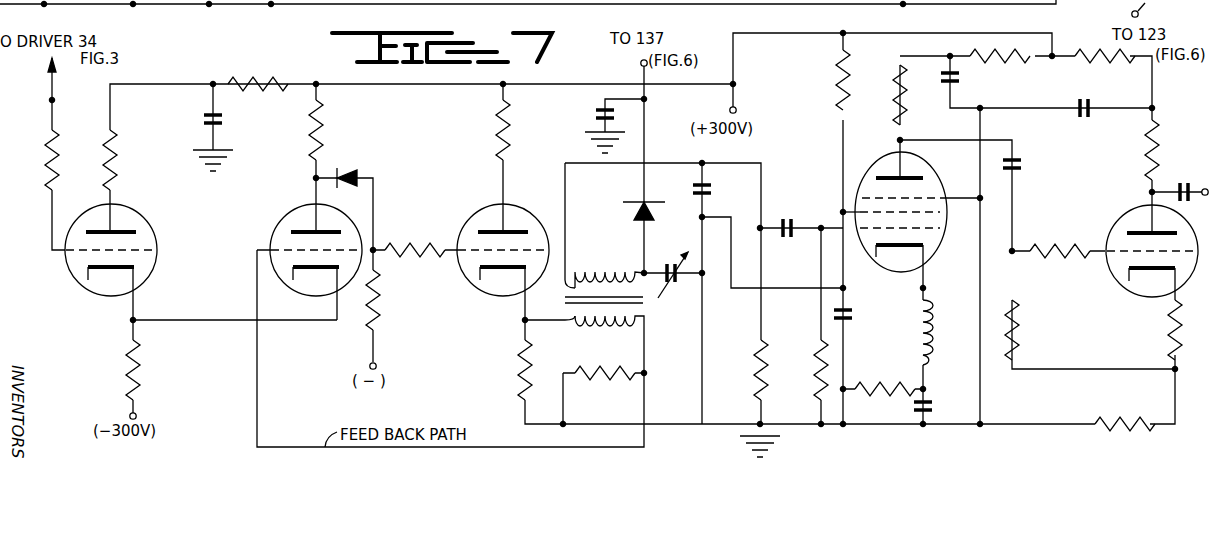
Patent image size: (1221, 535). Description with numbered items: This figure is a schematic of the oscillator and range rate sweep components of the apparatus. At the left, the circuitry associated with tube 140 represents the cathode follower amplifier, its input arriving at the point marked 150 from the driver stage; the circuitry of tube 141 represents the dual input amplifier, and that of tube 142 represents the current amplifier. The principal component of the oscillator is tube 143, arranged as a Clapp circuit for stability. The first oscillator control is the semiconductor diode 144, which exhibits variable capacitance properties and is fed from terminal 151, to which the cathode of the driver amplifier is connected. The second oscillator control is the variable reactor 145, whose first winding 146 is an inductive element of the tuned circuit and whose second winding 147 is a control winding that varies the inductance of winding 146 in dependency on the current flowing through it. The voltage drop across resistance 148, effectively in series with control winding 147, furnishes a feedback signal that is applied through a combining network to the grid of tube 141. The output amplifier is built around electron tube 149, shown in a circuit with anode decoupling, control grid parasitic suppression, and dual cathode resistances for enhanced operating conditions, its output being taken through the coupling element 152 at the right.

The tube 140 is at (155, 225).
The tube 141 is at (272, 226).
The tube 142 is at (460, 226).
The tube 143 is at (874, 165).
The semiconductor diode 144 is at (636, 200).
The variable reactor 145 is at (647, 300).
The first winding 146 is at (620, 266).
The second winding 147 is at (612, 332).
The resistance 148 is at (612, 382).
The electron tube 149 is at (1112, 226).
The input terminal 150 is at (50, 100).
The terminal 151 is at (640, 63).
The output capacitor 152 is at (1204, 190).